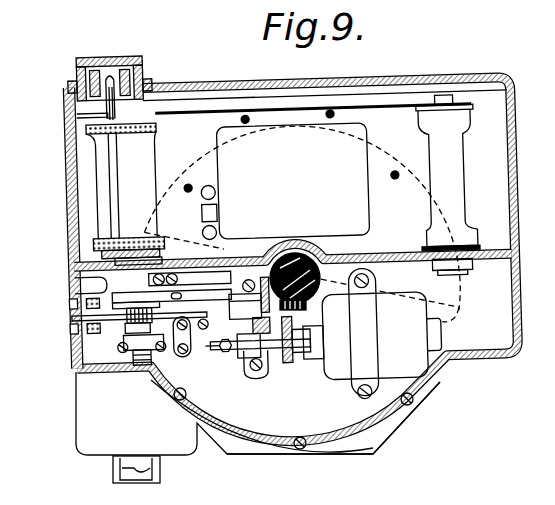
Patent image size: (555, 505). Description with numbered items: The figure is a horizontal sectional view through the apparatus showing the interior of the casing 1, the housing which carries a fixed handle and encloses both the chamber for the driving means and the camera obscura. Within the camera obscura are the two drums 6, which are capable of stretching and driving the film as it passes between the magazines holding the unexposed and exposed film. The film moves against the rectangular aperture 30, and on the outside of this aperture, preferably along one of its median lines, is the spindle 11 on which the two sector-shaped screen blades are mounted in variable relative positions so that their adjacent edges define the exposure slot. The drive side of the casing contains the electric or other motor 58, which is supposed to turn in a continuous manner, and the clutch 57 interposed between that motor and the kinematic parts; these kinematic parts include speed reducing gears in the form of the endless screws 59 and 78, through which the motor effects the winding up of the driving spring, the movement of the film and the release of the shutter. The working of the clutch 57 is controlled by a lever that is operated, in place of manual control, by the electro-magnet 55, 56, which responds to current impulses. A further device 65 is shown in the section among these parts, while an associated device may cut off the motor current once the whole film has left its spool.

The casing 1 is at (226, 86).
The cap valve 65 is at (92, 111).
The drums 6 is at (143, 125).
The rectangular aperture 30 is at (372, 120).
The spindle 11 is at (301, 252).
The endless screw 78 is at (127, 322).
The clutch 57 is at (270, 360).
The endless screw 59 is at (322, 360).
The motor 58 is at (410, 372).
The electro-magnet 56 is at (300, 479).
The electro-magnet 55 is at (419, 443).